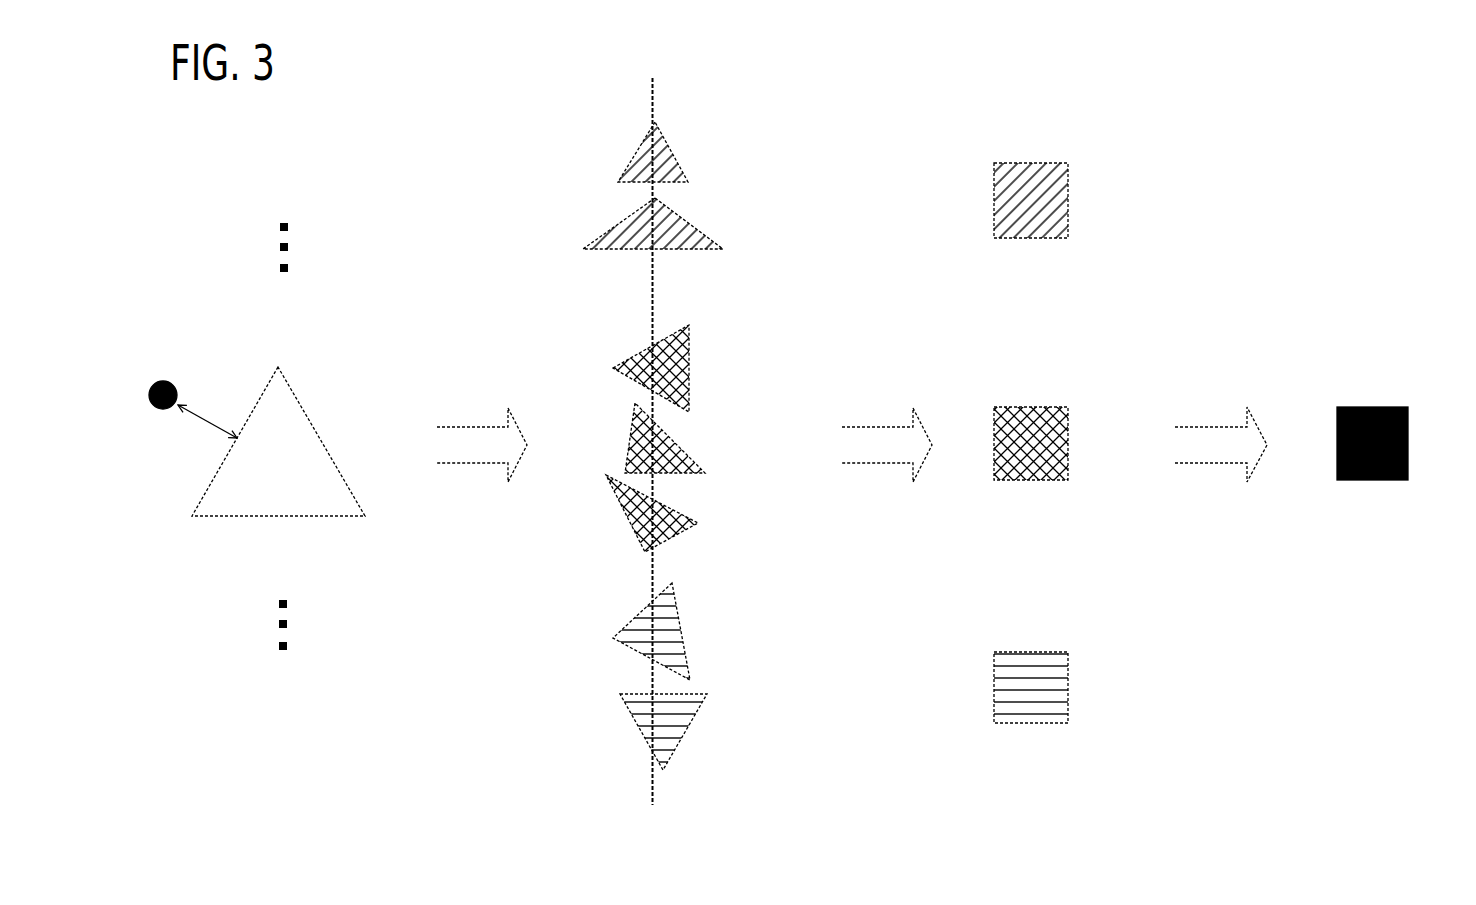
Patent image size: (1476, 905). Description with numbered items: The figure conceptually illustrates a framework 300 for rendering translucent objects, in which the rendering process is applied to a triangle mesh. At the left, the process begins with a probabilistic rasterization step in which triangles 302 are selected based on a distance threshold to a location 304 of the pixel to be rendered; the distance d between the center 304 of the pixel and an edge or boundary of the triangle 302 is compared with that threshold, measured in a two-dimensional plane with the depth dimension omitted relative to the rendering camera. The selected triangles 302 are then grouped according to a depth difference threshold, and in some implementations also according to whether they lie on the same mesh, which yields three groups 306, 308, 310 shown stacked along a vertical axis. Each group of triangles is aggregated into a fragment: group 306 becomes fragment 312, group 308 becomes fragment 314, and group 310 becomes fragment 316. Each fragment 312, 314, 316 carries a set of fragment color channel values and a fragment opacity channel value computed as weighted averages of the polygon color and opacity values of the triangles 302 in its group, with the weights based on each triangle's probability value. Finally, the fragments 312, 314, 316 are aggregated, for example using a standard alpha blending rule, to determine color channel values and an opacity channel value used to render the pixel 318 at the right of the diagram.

The framework 300 is at (448, 140).
The triangle 302 is at (292, 387).
The location of pixel to be rendered 304 is at (160, 380).
The first group of triangles 306 is at (723, 115).
The second group of triangles 308 is at (723, 318).
The third group of triangles 310 is at (723, 583).
The first fragment 312 is at (1067, 202).
The second fragment 314 is at (1067, 443).
The third fragment 316 is at (1068, 682).
The pixel 318 is at (1403, 407).